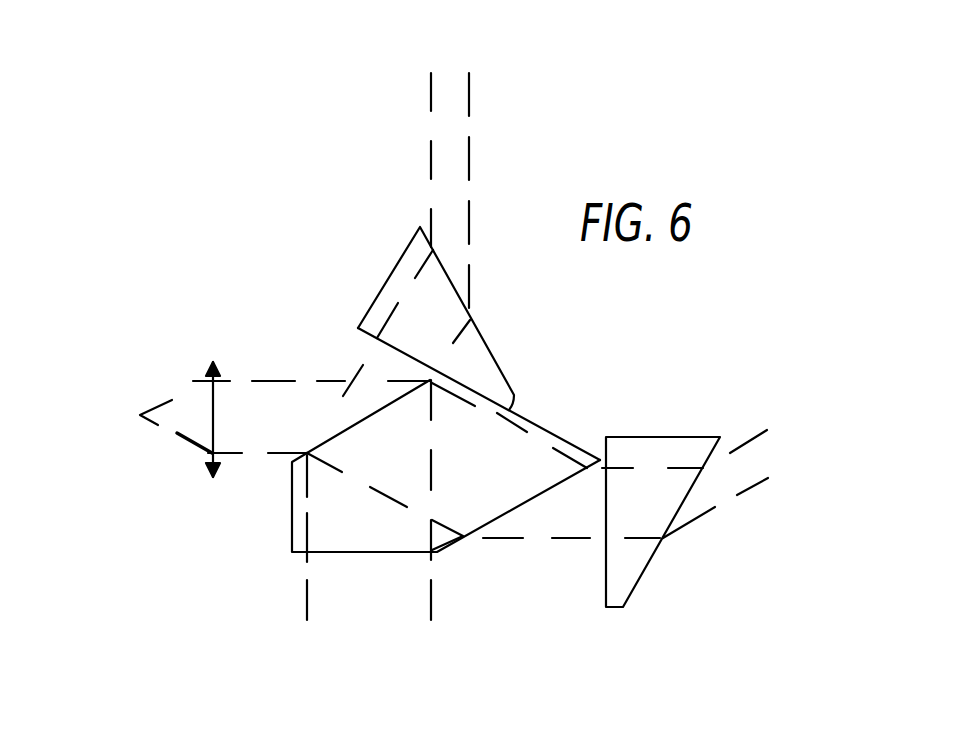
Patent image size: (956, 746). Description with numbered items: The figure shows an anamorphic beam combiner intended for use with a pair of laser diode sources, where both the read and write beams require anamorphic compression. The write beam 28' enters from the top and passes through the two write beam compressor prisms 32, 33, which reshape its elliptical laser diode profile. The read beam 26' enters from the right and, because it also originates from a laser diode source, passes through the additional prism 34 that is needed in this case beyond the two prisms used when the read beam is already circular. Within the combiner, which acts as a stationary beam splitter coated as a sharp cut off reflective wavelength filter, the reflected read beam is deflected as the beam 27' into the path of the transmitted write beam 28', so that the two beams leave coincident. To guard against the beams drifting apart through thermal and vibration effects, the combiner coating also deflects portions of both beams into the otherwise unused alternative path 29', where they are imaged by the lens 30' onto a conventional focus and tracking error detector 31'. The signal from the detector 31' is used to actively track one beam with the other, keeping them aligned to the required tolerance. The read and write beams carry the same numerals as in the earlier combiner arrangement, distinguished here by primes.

The read beam 26' is at (663, 479).
The deflected read beam 27' is at (370, 525).
The write beam 28' is at (456, 170).
The alternative path 29' is at (311, 409).
The lens 30' is at (186, 396).
The focus and tracking error detector 31' is at (134, 443).
The write beam compressor prism 32 is at (478, 367).
The write beam compressor prism 33 is at (290, 503).
The additional prism 34 is at (655, 443).